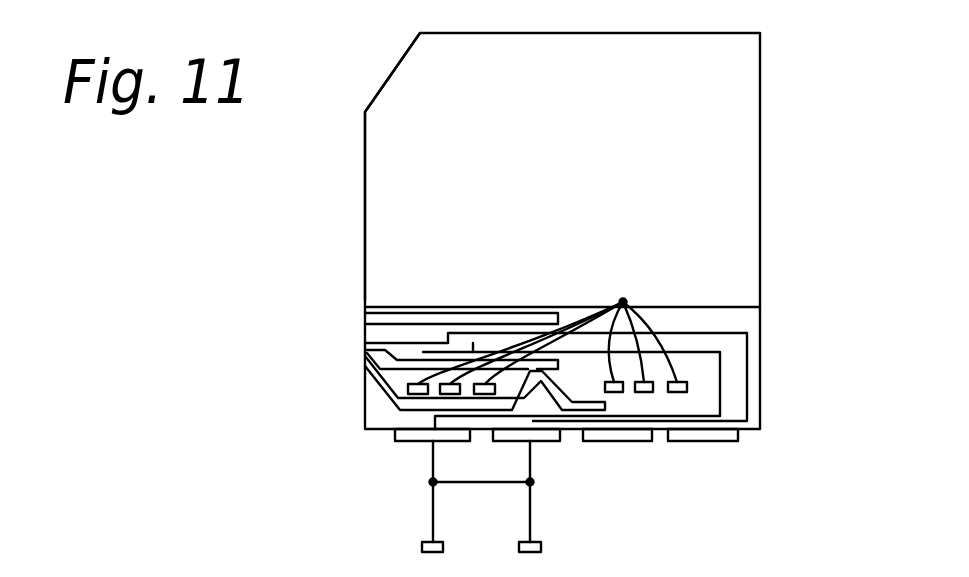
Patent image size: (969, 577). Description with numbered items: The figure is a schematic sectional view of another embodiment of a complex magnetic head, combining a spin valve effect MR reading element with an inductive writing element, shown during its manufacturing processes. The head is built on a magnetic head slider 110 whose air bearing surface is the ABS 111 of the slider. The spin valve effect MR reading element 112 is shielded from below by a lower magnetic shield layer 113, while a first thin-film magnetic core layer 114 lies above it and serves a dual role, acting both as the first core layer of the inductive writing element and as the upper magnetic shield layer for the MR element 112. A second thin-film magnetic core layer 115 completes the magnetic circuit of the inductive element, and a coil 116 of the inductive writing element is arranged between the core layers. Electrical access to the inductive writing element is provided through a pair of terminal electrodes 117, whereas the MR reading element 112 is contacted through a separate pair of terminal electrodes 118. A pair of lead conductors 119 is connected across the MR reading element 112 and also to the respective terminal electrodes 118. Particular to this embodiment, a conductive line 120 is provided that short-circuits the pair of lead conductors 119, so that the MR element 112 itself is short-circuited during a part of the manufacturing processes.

The magnetic head slider 110 is at (743, 118).
The ABS of the slider 111 is at (366, 182).
The spin valve effect MR reading element 112 is at (366, 344).
The lower magnetic shield layer 113 is at (366, 313).
The first thin-film magnetic core layer 114 is at (366, 356).
The second thin-film magnetic core layer 115 is at (364, 384).
The coil 116 is at (623, 302).
The pair of terminal electrodes for the inductive writing element 117 is at (680, 439).
The pair of terminal electrodes for the MR reading element 118 is at (497, 441).
The pair of lead conductors 119 is at (722, 362).
The conductive line 120 is at (508, 482).